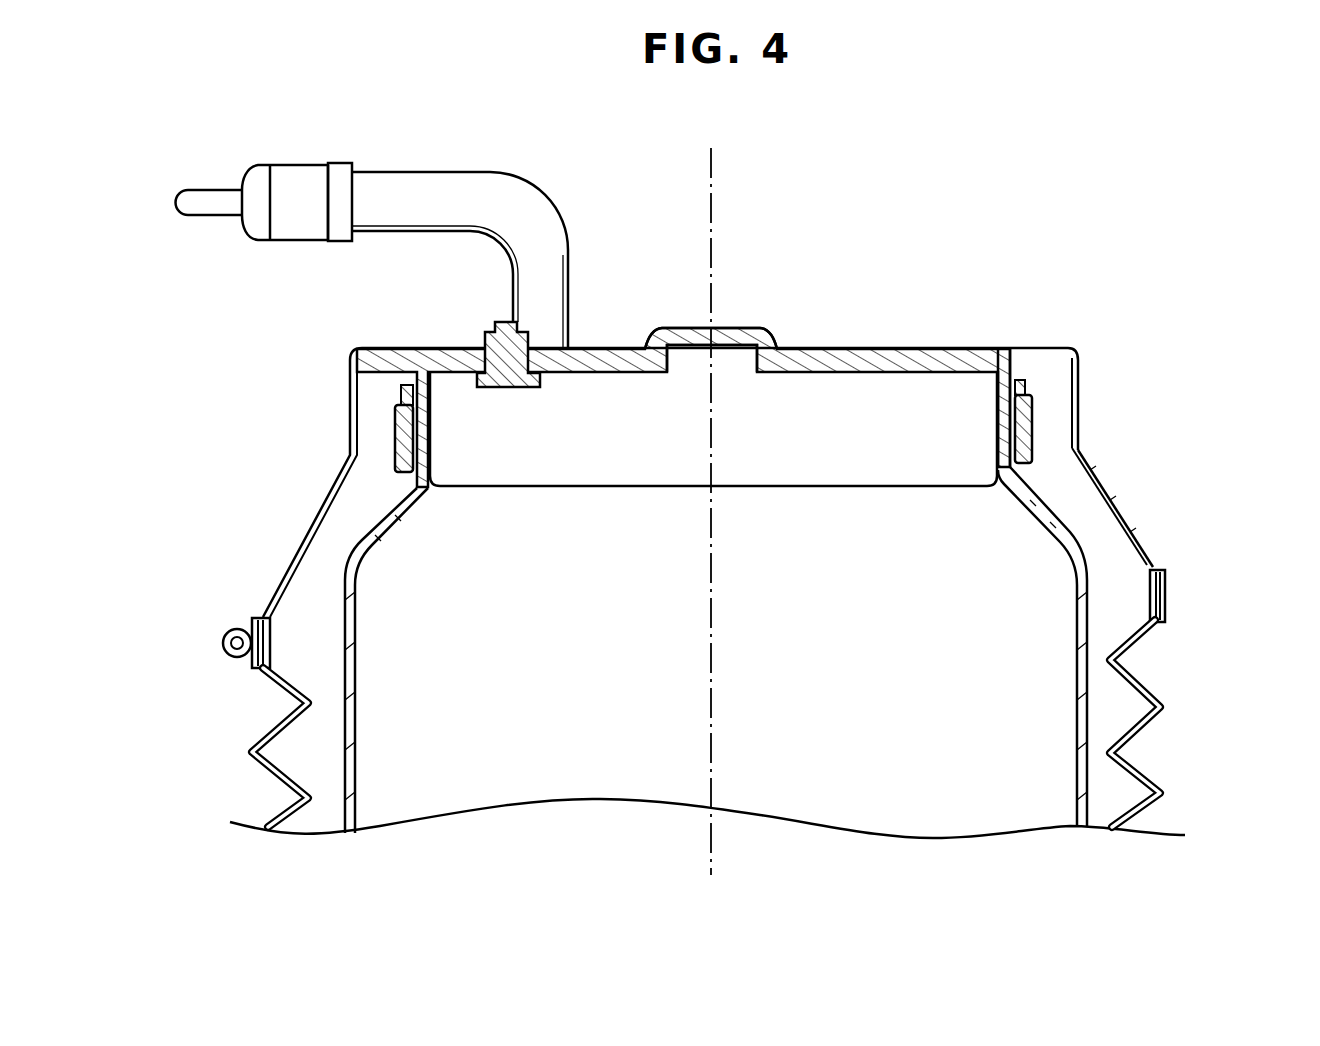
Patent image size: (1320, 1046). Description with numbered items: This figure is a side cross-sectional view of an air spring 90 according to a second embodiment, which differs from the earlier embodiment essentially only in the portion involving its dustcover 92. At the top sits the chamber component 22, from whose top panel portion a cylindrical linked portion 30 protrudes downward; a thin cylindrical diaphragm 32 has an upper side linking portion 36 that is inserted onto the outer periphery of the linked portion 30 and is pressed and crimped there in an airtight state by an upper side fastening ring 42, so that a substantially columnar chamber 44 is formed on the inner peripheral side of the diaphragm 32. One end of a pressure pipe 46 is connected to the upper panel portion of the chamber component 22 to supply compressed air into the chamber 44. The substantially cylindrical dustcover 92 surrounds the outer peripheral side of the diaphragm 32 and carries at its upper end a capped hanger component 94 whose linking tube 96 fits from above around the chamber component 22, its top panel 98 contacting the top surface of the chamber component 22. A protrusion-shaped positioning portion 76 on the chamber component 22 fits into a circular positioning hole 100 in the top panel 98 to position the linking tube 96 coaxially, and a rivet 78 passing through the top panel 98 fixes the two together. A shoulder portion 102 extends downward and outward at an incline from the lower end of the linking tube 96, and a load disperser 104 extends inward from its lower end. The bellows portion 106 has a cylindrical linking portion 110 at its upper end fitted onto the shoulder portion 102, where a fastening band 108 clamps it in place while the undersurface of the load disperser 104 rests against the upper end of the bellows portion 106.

The chamber component 22 is at (1008, 349).
The linked portion 30 is at (433, 432).
The diaphragm 32 is at (356, 683).
The upper side linking portion 36 is at (410, 380).
The upper side fastening ring 42 is at (398, 398).
The chamber 44 is at (774, 725).
The pressure pipe 46 is at (445, 172).
The positioning portion 76 is at (772, 327).
The rivet 78 is at (540, 388).
The air spring 90 is at (1142, 270).
The dustcover 92 is at (1168, 553).
The hanger component 94 is at (1075, 349).
The linking tube 96 is at (1079, 400).
The top panel 98 is at (930, 348).
The positioning hole 100 is at (668, 372).
The shoulder portion 102 is at (1118, 508).
The load disperser 104 is at (1078, 620).
The bellows portion 106 is at (1163, 703).
The fastening band 108 is at (1167, 596).
The linking portion 110 is at (262, 612).